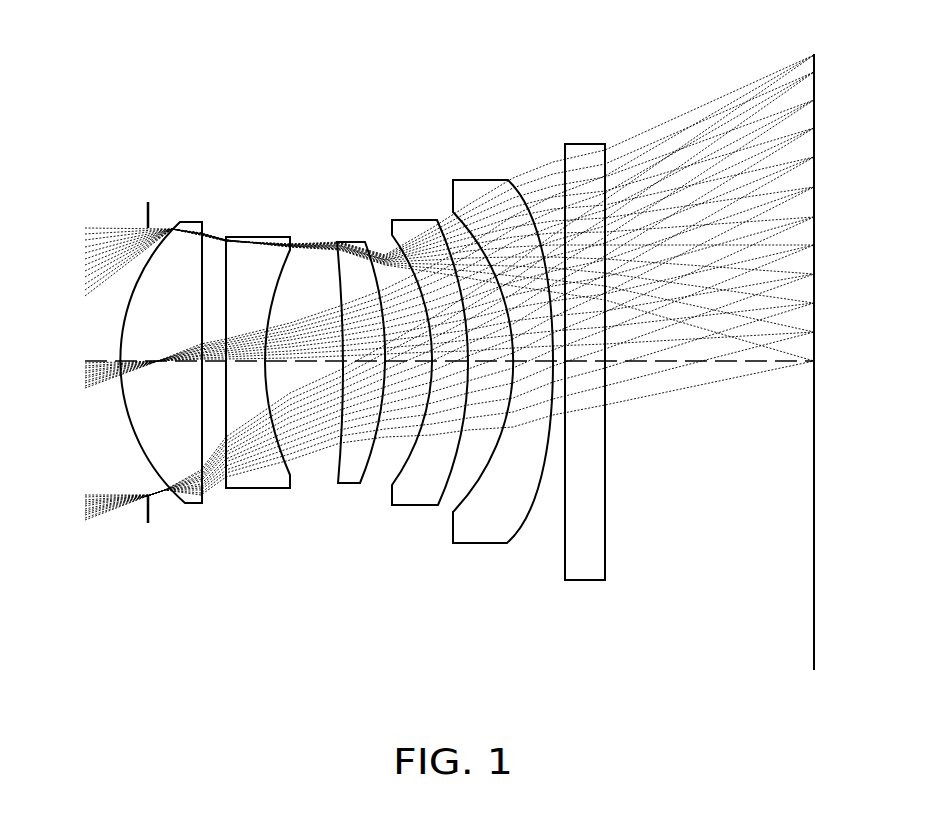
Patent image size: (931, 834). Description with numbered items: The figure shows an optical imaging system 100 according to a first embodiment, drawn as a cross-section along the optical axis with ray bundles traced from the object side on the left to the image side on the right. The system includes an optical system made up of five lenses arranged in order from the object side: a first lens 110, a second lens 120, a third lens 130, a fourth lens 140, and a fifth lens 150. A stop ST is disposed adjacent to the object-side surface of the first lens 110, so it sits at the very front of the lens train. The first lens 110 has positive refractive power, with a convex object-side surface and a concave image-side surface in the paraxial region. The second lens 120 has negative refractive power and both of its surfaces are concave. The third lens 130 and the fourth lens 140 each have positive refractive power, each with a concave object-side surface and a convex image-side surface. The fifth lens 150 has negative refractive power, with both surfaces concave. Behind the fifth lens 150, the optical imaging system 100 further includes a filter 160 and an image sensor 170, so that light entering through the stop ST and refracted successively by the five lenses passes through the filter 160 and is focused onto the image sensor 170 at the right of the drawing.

The optical imaging system 100 is at (311, 131).
The stop ST is at (147, 519).
The first lens 110 is at (185, 504).
The second lens 120 is at (243, 490).
The third lens 130 is at (347, 486).
The fourth lens 140 is at (413, 507).
The fifth lens 150 is at (480, 547).
The filter 160 is at (583, 582).
The image sensor 170 is at (813, 633).